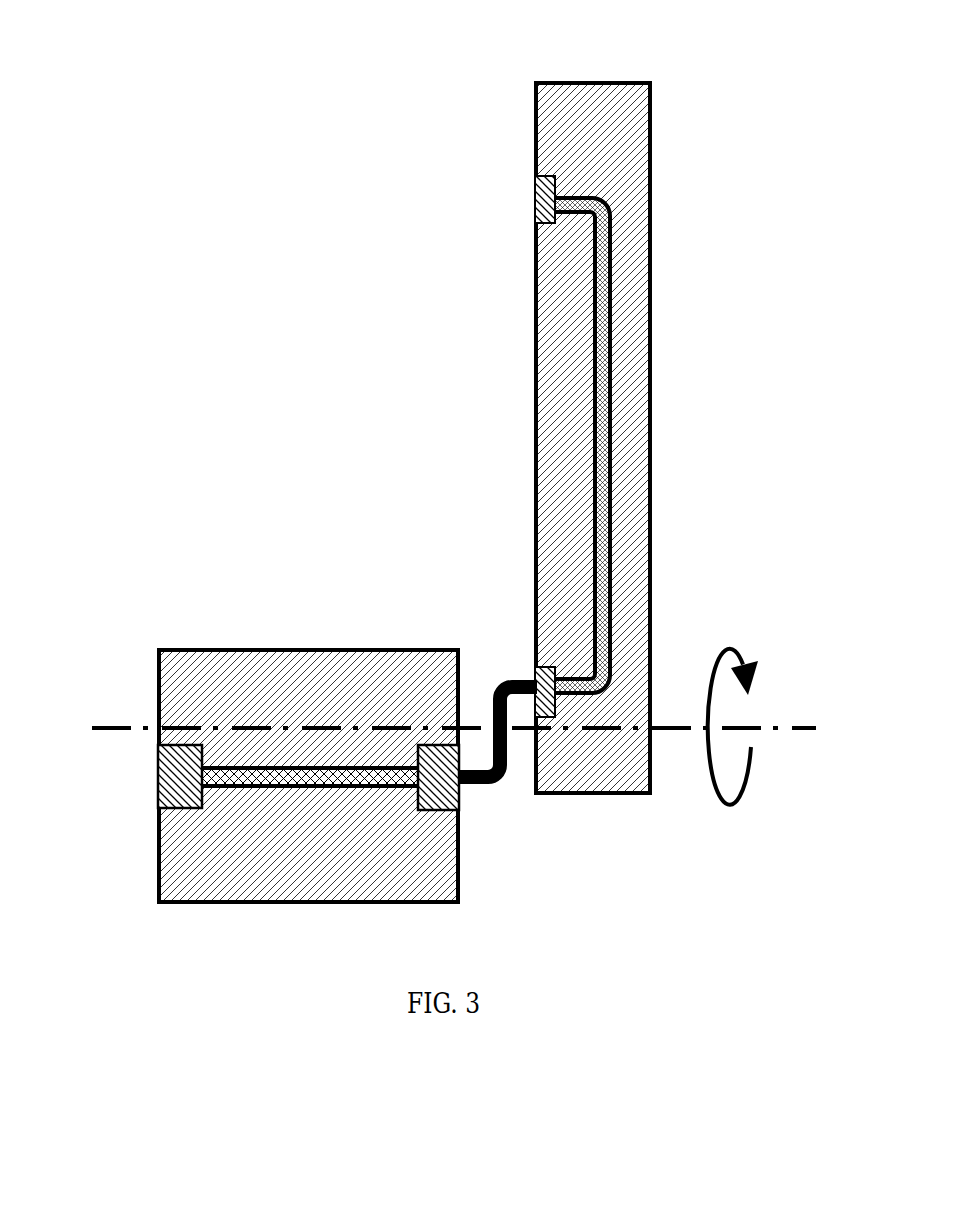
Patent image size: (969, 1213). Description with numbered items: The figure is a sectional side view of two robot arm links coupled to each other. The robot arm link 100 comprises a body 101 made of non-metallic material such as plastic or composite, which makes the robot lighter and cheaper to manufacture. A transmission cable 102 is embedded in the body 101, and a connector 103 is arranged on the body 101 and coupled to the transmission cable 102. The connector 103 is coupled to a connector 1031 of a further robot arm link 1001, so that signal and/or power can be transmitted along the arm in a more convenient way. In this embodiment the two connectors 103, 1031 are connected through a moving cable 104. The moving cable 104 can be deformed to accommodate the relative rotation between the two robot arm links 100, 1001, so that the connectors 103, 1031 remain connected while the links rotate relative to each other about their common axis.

The robot arm link 100 is at (607, 402).
The body 101 is at (623, 155).
The transmission cable 102 is at (597, 330).
The connector 103 is at (545, 193).
The further robot arm link 1001 is at (302, 731).
The connector of the further robot arm link 1031 is at (170, 778).
The moving cable 104 is at (500, 773).